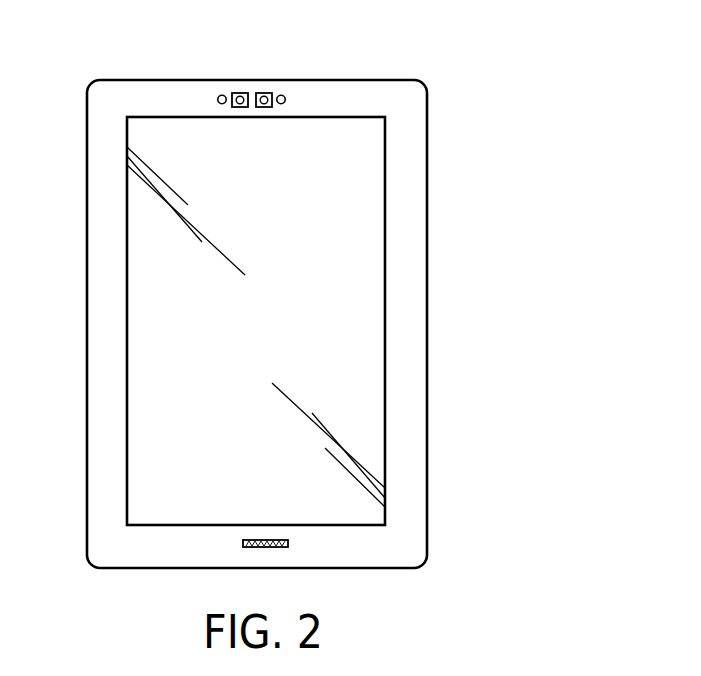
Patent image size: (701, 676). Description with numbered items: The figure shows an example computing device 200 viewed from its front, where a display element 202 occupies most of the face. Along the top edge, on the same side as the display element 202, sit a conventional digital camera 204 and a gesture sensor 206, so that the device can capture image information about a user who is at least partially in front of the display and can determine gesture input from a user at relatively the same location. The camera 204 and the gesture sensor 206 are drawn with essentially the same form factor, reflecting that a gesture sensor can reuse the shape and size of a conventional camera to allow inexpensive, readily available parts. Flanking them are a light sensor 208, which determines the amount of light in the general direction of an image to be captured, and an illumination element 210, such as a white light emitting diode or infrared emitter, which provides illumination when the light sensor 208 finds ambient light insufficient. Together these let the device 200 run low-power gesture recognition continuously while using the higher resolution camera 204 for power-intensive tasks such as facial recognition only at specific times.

The computing device 200 is at (569, 129).
The display element 202 is at (127, 128).
The digital camera 204 is at (239, 93).
The gesture sensor 206 is at (264, 93).
The light sensor 208 is at (286, 97).
The illumination element 210 is at (217, 98).